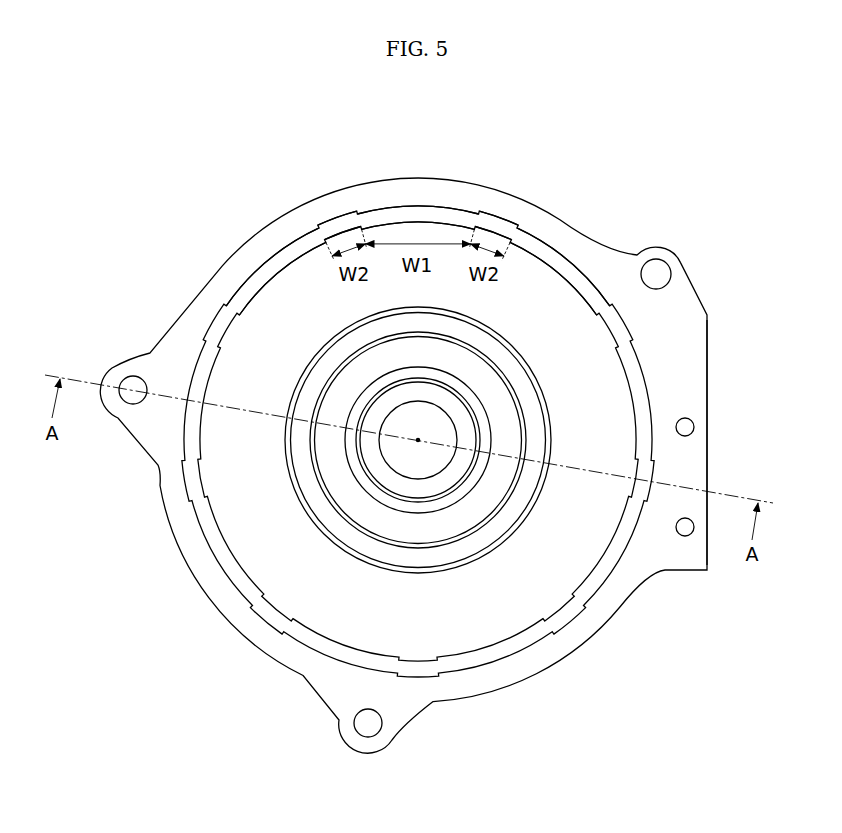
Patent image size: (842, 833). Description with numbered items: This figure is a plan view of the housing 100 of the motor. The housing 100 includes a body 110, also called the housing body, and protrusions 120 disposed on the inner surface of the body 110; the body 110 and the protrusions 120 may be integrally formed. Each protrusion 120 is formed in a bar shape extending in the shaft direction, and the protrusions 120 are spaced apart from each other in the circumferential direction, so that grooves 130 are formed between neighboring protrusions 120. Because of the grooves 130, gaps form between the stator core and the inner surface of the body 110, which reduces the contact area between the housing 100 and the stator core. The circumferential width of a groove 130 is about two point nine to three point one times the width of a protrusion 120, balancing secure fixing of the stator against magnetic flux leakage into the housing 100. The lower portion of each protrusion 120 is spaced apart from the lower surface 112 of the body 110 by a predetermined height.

The housing 100 is at (135, 126).
The body 110 is at (283, 240).
The lower surface 112 is at (597, 385).
The protrusion 120 is at (335, 218).
The groove 130 is at (247, 277).